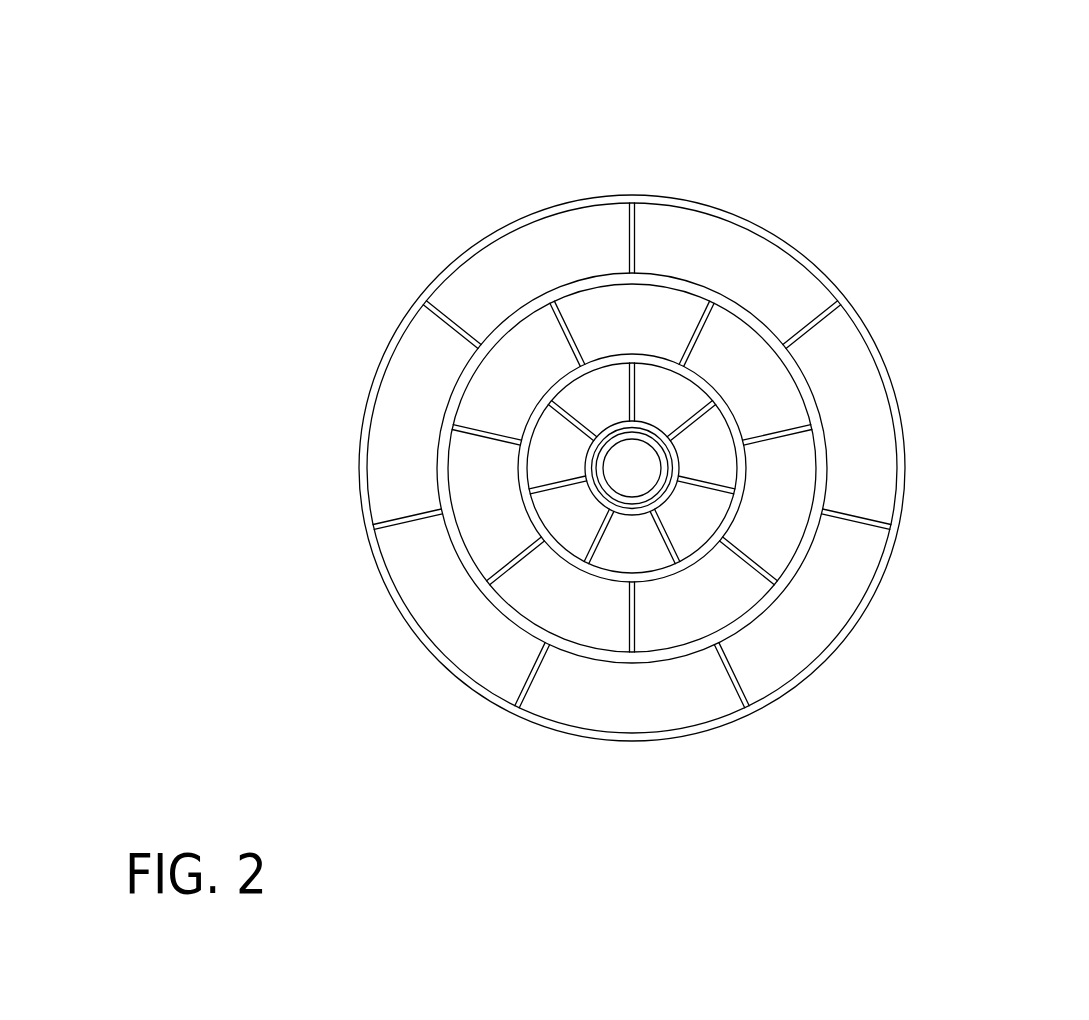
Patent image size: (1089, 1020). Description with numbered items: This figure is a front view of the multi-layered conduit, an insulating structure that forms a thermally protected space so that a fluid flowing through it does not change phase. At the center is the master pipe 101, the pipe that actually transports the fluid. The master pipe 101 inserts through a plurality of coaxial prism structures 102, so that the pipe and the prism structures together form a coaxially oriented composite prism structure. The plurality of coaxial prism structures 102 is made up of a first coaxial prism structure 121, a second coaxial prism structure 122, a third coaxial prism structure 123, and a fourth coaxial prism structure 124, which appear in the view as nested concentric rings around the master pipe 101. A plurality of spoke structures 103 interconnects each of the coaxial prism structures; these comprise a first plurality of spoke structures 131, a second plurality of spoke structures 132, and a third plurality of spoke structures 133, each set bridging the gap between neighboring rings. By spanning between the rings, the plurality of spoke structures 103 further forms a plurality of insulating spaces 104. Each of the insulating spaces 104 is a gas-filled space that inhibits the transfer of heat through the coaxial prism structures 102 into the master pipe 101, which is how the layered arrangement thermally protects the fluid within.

The master pipe 101 is at (663, 467).
The plurality of coaxial prism structures 102 is at (763, 45).
The plurality of spoke structures 103 is at (632, 559).
The plurality of insulating spaces 104 is at (587, 395).
The first coaxial prism structure 121 is at (657, 430).
The second coaxial prism structure 122 is at (657, 357).
The third coaxial prism structure 123 is at (667, 280).
The fourth coaxial prism structure 124 is at (603, 203).
The first plurality of spoke structures 131 is at (597, 537).
The second plurality of spoke structures 132 is at (632, 622).
The third plurality of spoke structures 133 is at (533, 833).